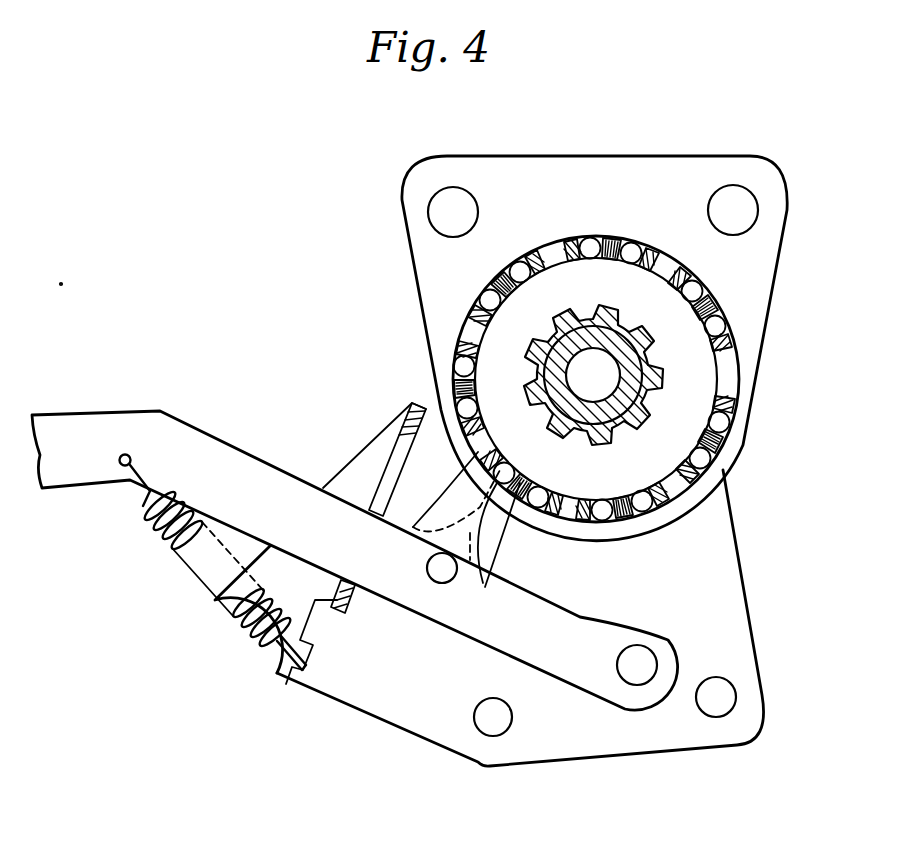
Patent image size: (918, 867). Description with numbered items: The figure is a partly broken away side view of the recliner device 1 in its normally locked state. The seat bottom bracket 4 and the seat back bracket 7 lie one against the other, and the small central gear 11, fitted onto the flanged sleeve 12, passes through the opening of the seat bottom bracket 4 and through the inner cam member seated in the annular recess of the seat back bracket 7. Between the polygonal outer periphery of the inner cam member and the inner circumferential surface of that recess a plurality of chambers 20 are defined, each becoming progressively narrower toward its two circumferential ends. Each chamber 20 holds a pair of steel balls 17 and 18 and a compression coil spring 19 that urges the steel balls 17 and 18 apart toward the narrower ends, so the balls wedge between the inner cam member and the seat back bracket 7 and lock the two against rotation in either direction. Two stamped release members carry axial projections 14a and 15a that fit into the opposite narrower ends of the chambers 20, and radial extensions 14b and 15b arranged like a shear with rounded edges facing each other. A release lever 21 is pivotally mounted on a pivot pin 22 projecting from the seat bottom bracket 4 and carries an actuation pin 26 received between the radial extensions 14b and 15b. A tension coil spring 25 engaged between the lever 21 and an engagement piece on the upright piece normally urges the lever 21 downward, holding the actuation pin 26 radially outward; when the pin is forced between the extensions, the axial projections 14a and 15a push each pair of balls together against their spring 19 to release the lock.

The recliner device 1 is at (320, 333).
The seat bottom bracket 4 is at (712, 735).
The seat back bracket 7 is at (633, 162).
The small central gear 11 is at (563, 323).
The flanged sleeve 12 is at (616, 342).
The axial projections 14a is at (733, 347).
The radial extension 14b is at (502, 547).
The axial projections 15a is at (691, 270).
The radial extension 15b is at (440, 497).
The steel ball 17 is at (520, 262).
The steel ball 18 is at (486, 294).
The compression coil spring 19 is at (726, 430).
The chamber 20 is at (515, 478).
The release lever 21 is at (103, 412).
The pivot pin 22 is at (636, 681).
The tension coil spring 25 is at (150, 527).
The actuation pin 26 is at (438, 573).